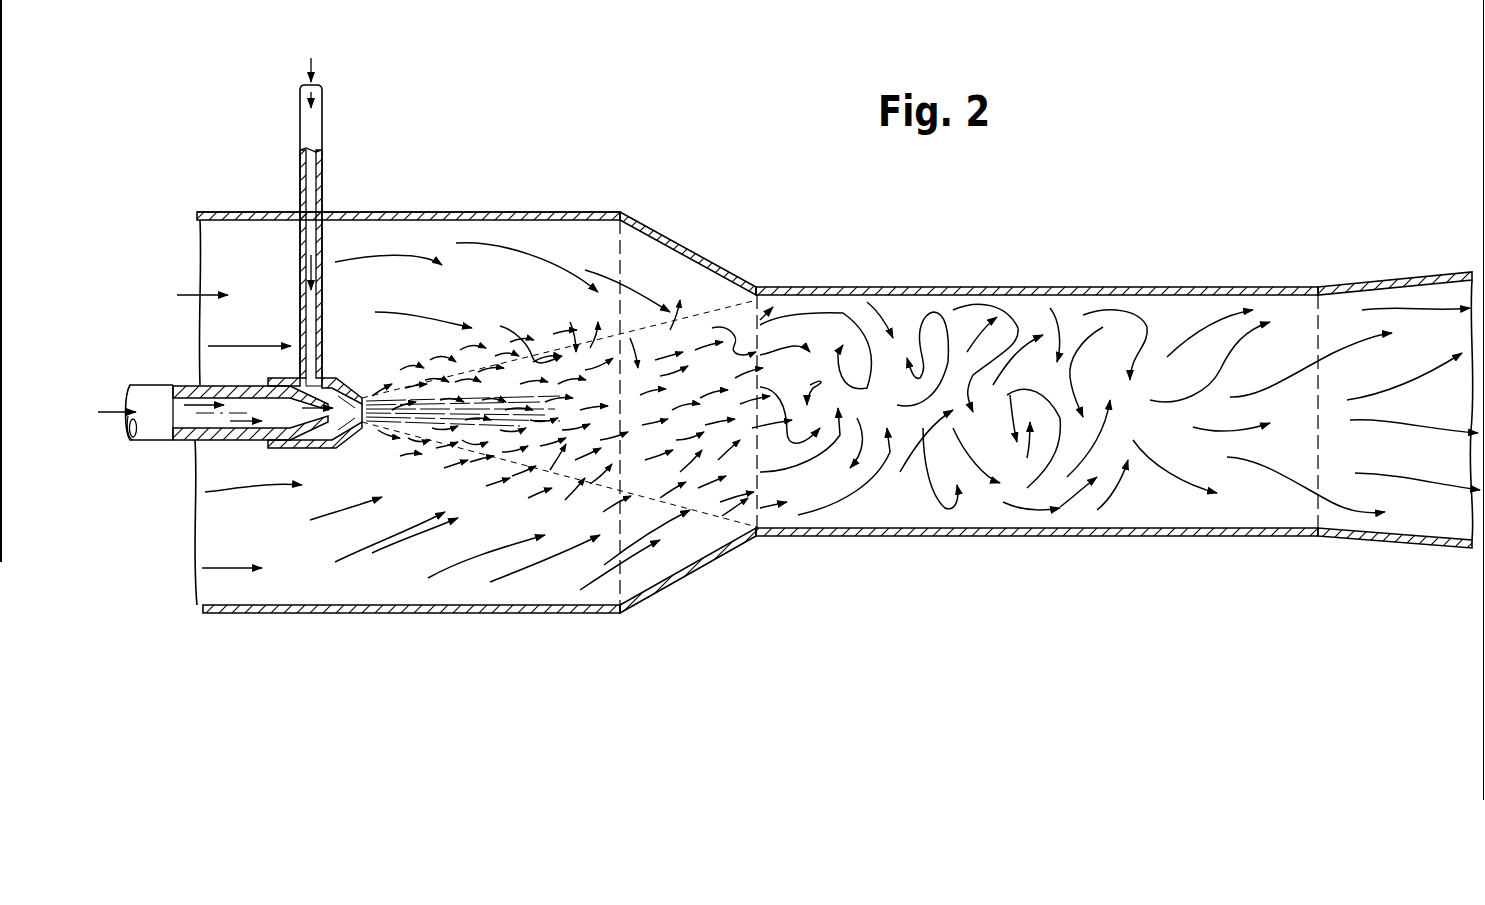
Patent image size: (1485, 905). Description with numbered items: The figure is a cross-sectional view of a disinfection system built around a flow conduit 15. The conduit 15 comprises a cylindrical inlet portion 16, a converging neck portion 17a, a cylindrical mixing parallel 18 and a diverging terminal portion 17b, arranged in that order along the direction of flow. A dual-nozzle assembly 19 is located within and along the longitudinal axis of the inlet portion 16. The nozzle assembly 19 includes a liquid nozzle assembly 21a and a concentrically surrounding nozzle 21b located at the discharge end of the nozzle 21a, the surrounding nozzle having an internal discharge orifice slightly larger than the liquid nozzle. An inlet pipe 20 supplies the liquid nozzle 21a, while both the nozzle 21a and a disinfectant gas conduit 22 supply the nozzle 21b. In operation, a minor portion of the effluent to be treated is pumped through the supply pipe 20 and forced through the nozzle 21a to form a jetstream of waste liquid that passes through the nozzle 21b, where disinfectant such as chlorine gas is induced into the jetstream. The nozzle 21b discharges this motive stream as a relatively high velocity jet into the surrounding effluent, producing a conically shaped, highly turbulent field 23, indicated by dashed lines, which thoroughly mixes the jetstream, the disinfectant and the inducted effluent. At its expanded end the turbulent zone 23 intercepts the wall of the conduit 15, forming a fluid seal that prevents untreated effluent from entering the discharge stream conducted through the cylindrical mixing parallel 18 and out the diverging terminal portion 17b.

The flow conduit 15 is at (532, 212).
The cylindrical inlet portion 16 is at (393, 212).
The converging neck portion 17a is at (704, 254).
The diverging terminal portion 17b is at (1368, 283).
The cylindrical mixing parallel 18 is at (1046, 287).
The dual-nozzle assembly 19 is at (343, 443).
The inlet pipe 20 is at (160, 388).
The liquid nozzle assembly 21a is at (323, 407).
The concentrically surrounding nozzle 21b is at (353, 428).
The disinfectant gas conduit 22 is at (323, 356).
The turbulent field 23 is at (545, 492).